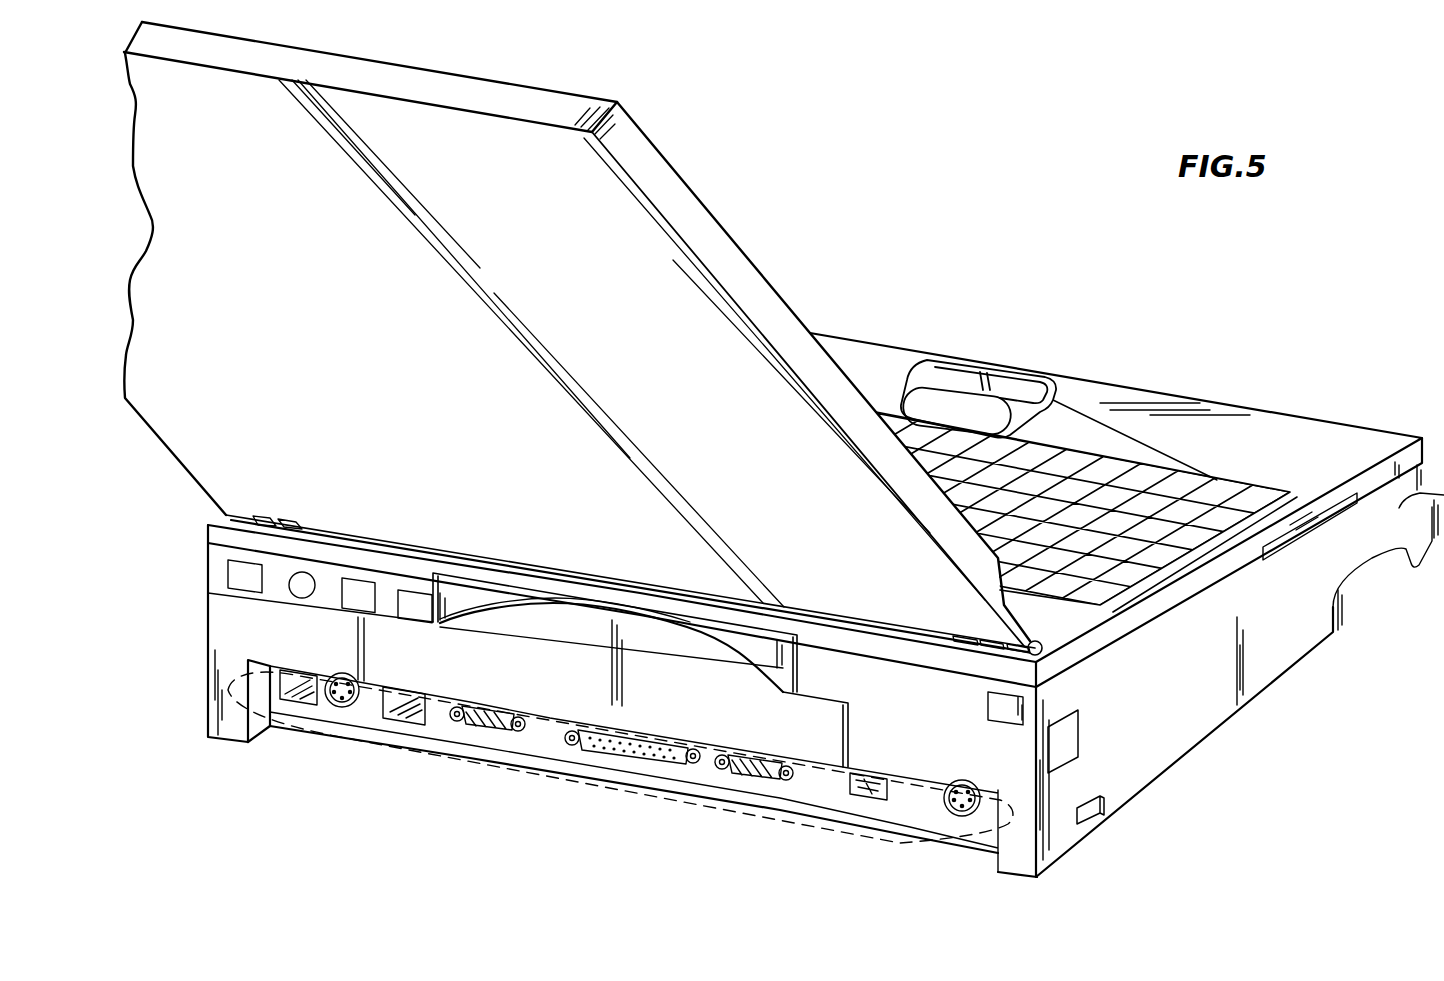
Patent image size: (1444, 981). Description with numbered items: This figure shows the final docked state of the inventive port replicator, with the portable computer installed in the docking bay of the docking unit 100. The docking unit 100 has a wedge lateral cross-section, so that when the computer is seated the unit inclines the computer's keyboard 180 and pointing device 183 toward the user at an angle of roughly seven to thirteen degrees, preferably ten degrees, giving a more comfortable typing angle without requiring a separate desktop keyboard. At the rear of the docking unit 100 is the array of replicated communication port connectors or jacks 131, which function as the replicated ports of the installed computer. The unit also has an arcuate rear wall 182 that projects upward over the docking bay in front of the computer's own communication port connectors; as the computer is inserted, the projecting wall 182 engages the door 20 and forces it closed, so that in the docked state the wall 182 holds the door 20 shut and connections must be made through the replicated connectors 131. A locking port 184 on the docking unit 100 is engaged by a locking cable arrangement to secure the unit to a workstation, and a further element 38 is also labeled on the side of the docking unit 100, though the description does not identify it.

The docking unit 100 is at (1270, 663).
The keyboard 180 is at (1218, 487).
The pointing device 183 is at (962, 405).
The rear wall 182 is at (745, 660).
The door 20 is at (747, 640).
The side access door 38 is at (1078, 738).
The locking port 184 is at (1100, 817).
The communication port connectors 131 is at (525, 793).